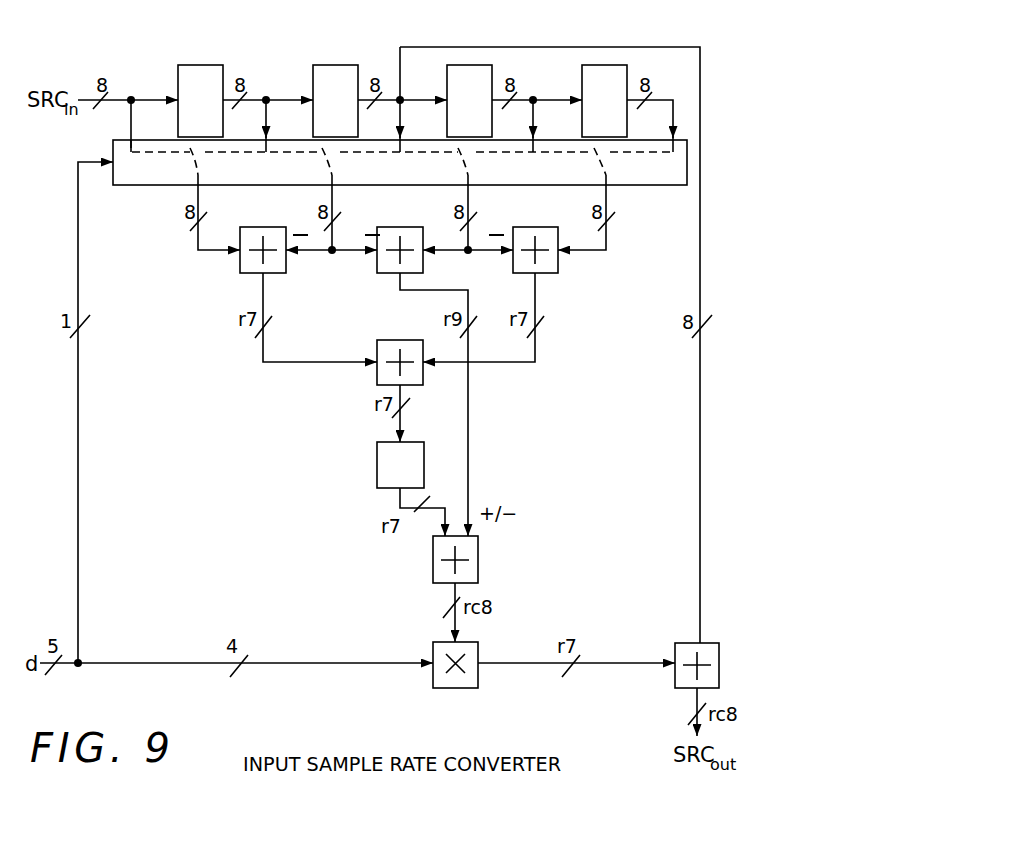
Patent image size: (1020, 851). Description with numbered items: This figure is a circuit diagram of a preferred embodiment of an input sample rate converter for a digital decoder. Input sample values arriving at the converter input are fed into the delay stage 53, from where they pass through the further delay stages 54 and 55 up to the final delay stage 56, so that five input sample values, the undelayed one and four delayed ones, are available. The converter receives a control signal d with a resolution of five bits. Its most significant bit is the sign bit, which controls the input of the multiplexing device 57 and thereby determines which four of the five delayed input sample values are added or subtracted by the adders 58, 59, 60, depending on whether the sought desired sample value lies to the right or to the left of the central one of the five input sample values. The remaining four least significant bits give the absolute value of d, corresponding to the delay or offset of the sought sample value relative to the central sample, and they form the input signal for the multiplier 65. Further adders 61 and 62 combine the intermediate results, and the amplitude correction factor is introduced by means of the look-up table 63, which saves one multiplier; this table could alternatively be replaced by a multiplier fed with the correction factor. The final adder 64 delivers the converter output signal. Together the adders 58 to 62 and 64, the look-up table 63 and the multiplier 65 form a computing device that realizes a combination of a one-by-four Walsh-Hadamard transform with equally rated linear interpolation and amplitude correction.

The delay stage 53 is at (207, 65).
The delay stage 54 is at (342, 65).
The delay stage 55 is at (476, 65).
The delay stage 56 is at (611, 65).
The multiplexing device 57 is at (687, 164).
The adder 58 is at (256, 228).
The adder 59 is at (391, 228).
The adder 60 is at (526, 228).
The adder 61 is at (388, 346).
The adder 62 is at (478, 552).
The look-up table 63 is at (386, 447).
The adder 64 is at (675, 684).
The multiplier 65 is at (478, 680).